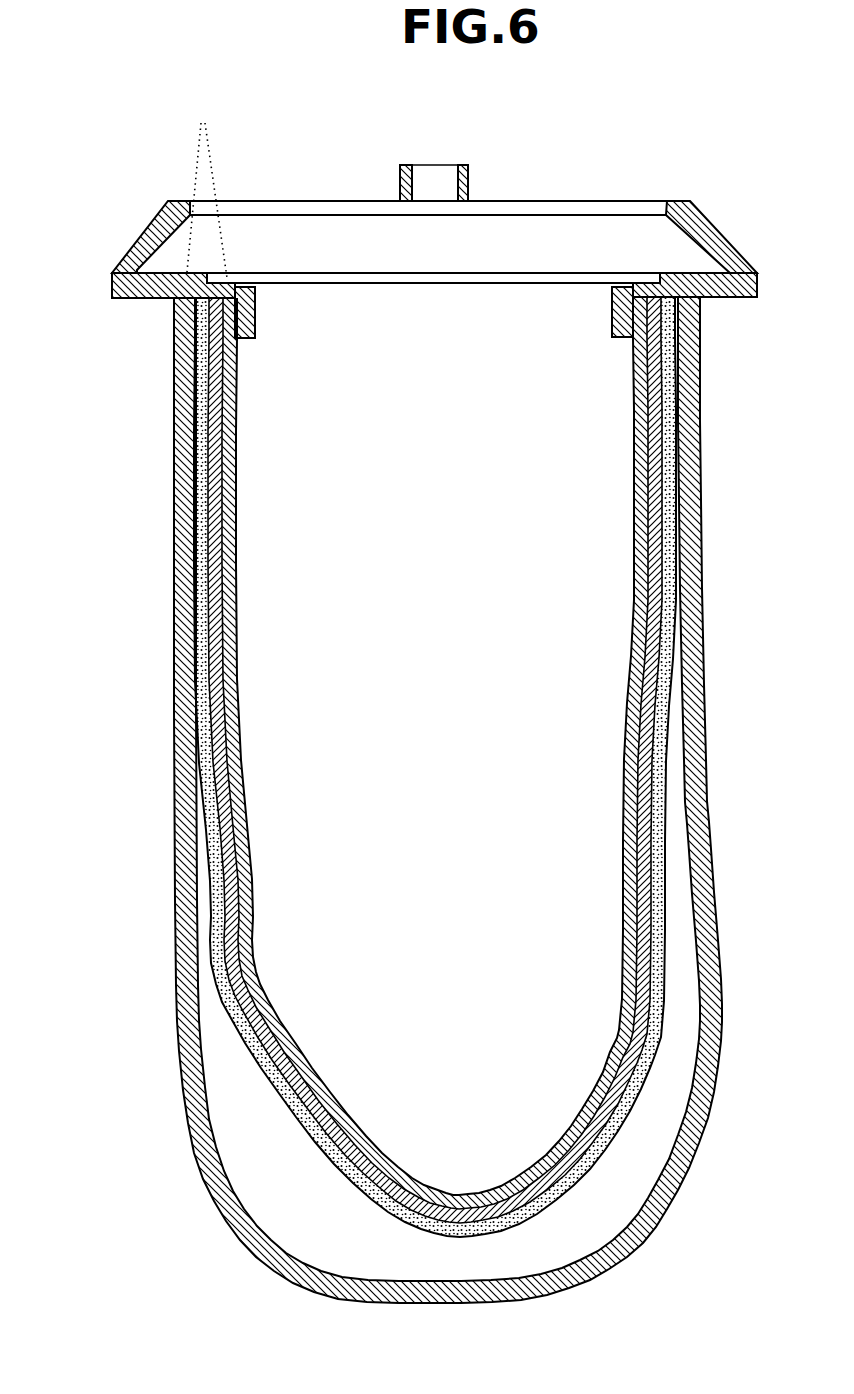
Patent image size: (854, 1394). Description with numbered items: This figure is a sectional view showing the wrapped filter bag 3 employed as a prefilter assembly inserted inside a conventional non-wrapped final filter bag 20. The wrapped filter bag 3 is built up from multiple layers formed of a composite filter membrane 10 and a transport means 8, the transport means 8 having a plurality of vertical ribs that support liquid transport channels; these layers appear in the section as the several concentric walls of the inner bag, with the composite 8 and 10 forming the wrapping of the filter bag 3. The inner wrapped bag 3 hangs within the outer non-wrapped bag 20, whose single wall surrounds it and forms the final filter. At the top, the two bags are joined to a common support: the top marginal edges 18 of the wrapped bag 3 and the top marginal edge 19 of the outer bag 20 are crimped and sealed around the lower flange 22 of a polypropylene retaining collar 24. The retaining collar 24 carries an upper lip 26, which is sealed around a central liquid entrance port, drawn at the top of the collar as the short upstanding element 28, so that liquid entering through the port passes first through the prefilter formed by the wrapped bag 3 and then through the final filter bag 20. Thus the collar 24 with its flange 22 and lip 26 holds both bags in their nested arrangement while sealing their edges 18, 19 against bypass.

The wrapped filter bag 3 is at (222, 1005).
The transport means 8 is at (677, 900).
The composite filter membrane 10 is at (680, 677).
The top marginal edges 18 is at (207, 187).
The top marginal edge 19 is at (165, 299).
The non-wrapped filter bag 20 is at (175, 750).
The lower flange 22 is at (257, 312).
The retaining collar 24 is at (128, 255).
The upper lip 26 is at (167, 217).
The inlet port 28 is at (442, 175).